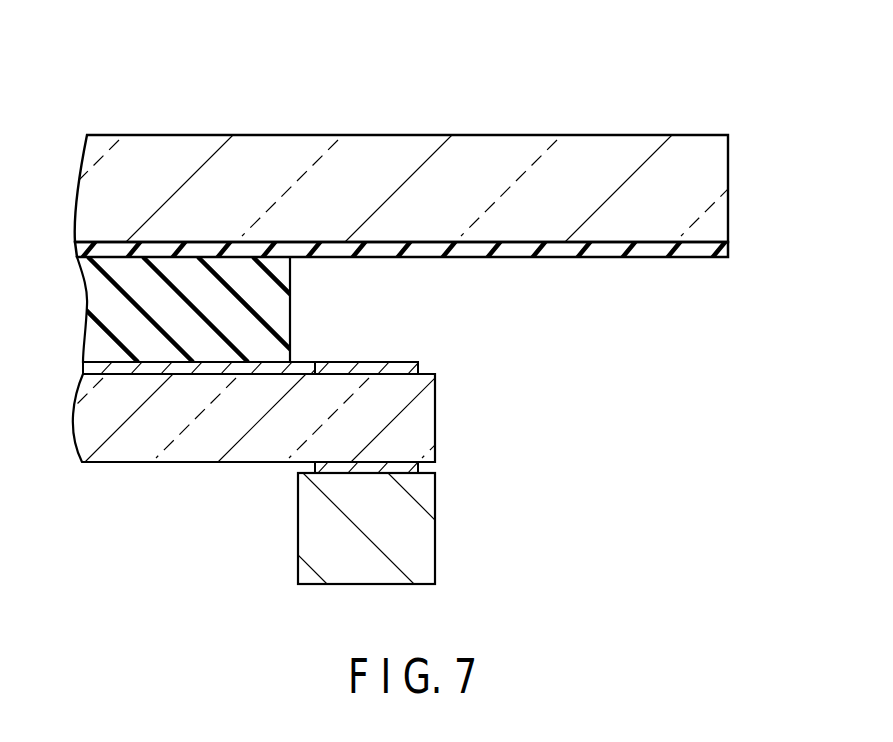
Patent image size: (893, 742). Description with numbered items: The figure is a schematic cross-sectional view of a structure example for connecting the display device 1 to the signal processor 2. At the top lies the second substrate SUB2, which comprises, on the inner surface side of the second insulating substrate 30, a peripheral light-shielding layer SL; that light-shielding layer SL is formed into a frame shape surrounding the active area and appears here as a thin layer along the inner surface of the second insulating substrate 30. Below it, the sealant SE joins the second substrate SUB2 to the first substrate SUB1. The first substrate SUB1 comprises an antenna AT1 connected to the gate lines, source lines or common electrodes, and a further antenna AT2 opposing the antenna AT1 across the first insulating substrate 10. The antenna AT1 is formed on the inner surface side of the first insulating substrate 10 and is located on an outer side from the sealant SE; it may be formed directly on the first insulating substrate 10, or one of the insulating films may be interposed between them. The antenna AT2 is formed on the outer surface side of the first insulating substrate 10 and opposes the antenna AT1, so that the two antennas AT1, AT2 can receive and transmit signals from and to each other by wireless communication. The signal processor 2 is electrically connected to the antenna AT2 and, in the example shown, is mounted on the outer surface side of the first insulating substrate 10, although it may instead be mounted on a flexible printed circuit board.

The display device 1 is at (398, 315).
The second insulating substrate 30 is at (97, 166).
The second substrate SUB2 is at (403, 151).
The peripheral light-shielding layer SL is at (78, 248).
The sealant SE is at (100, 311).
The first insulating substrate 10 is at (85, 402).
The first substrate SUB1 is at (280, 442).
The antenna AT1 is at (392, 364).
The antenna AT2 is at (330, 470).
The signal processor 2 is at (420, 535).